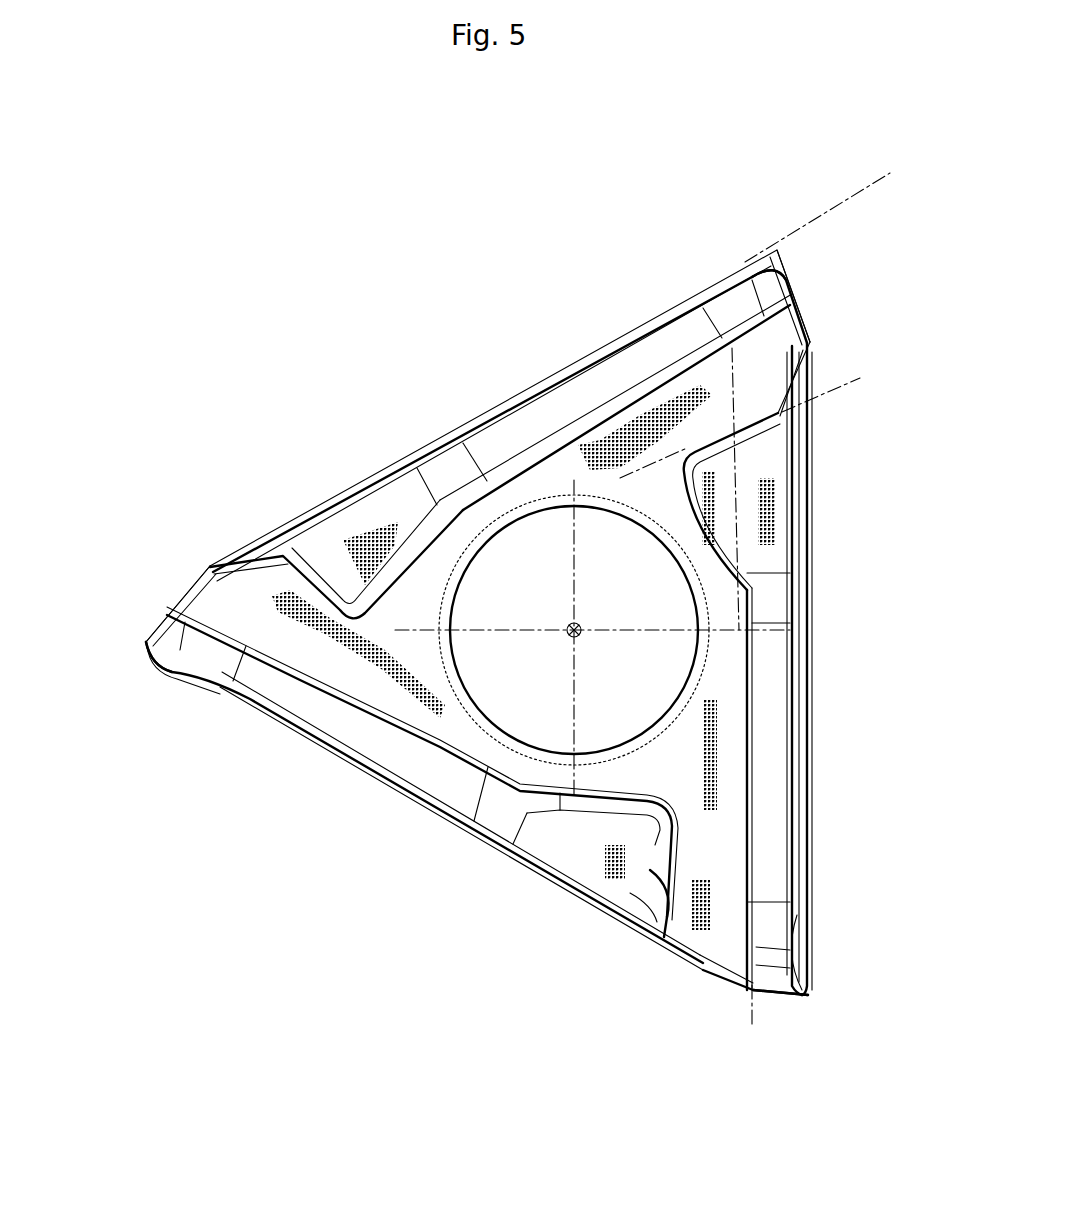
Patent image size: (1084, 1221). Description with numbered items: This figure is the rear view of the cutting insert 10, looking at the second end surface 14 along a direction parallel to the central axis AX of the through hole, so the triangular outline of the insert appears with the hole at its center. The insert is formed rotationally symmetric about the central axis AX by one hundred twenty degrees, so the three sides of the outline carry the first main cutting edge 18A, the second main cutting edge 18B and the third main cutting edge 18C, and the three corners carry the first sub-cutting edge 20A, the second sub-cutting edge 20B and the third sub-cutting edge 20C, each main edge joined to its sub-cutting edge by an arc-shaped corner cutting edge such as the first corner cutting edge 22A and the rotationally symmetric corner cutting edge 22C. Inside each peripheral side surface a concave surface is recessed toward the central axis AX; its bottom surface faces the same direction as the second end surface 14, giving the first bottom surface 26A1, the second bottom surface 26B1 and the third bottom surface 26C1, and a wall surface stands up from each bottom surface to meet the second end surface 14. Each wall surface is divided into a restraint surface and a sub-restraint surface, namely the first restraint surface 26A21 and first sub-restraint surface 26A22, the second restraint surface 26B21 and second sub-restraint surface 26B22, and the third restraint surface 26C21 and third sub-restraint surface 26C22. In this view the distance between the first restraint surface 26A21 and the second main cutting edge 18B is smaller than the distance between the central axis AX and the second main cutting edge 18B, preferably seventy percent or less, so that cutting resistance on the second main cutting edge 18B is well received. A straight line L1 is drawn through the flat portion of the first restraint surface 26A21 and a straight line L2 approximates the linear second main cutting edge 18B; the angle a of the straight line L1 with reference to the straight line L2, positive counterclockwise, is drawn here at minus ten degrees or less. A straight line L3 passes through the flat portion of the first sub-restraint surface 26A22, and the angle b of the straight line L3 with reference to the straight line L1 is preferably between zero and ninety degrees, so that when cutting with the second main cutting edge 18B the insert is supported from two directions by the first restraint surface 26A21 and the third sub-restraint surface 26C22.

The cutting insert 10 is at (372, 862).
The second end surface 14 is at (262, 592).
The first main cutting edge 18A is at (805, 455).
The second main cutting edge 18B is at (650, 382).
The third main cutting edge 18C is at (370, 777).
The first sub-cutting edge 20A is at (790, 977).
The second sub-cutting edge 20B is at (770, 265).
The third sub-cutting edge 20C is at (164, 645).
The first corner cutting edge 22A is at (805, 992).
The corner cutting edge 22C is at (783, 253).
The first bottom surface 26A1 is at (753, 547).
The first restraint surface 26A21 is at (745, 448).
The first sub-restraint surface 26A22 is at (760, 715).
The second bottom surface 26B1 is at (393, 513).
The second restraint surface 26B21 is at (334, 588).
The second sub-restraint surface 26B22 is at (561, 426).
The third bottom surface 26C1 is at (453, 790).
The third restraint surface 26C21 is at (650, 868).
The third sub-restraint surface 26C22 is at (288, 684).
The central axis AX is at (568, 625).
The angle a is at (668, 446).
The angle b is at (745, 393).
The straight line L1 is at (860, 378).
The straight line L2 is at (826, 213).
The straight line L3 is at (757, 1012).